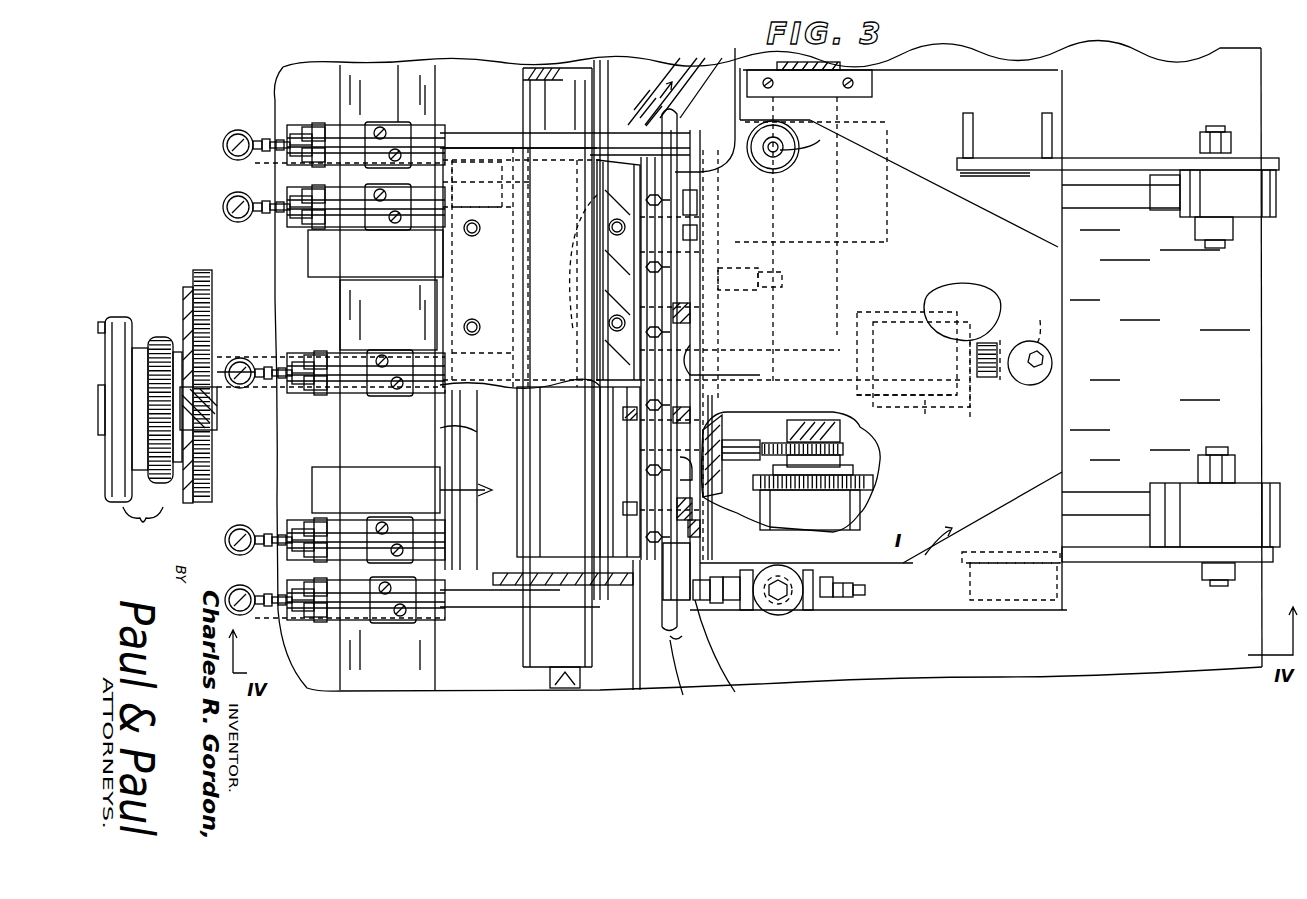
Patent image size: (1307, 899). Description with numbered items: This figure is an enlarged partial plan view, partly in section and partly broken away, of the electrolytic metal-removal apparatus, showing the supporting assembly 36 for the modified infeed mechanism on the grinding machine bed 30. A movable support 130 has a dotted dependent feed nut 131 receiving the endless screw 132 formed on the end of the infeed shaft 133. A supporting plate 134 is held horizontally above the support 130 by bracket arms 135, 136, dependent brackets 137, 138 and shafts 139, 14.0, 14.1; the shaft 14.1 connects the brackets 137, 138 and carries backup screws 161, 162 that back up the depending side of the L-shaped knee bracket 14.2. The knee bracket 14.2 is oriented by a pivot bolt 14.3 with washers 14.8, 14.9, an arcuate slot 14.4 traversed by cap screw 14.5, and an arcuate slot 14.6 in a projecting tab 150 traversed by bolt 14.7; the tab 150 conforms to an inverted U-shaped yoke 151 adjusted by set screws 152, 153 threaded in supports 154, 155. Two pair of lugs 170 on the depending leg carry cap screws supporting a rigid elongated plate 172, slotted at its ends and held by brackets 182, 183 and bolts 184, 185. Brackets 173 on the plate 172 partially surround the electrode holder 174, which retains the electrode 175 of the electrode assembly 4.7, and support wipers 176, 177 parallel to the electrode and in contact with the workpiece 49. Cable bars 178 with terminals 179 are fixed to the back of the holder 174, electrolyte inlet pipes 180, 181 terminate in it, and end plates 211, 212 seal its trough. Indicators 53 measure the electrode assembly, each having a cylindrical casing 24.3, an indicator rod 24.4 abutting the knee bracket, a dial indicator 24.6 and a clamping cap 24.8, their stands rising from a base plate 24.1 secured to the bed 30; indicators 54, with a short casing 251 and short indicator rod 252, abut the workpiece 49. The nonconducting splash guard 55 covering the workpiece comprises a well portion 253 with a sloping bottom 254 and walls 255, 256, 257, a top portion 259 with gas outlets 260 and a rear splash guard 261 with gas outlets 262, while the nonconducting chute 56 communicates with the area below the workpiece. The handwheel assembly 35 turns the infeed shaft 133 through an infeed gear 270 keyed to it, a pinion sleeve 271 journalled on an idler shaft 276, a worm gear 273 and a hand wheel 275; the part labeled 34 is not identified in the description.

The metal grinding machine bed 30 is at (333, 660).
The measuring indicator means 53 is at (238, 132).
The measuring indicator means 54 is at (238, 194).
The dial indicator 24.6 is at (222, 148).
The base plate 24.1 is at (330, 128).
The cap 24.8 is at (378, 130).
The cylindrical casing 24.3 is at (462, 133).
The indicator rod 24.4 is at (690, 165).
The short casing 251 is at (350, 215).
The top splash guard portion 259 is at (445, 305).
The well portion 253 is at (376, 490).
The wall 255 is at (460, 438).
The solid sloping bottom 254 is at (470, 458).
The workpiece 49 is at (540, 470).
The hand wheel 275 is at (116, 325).
The worm gear 273 is at (158, 340).
The idler shaft 276 is at (210, 410).
The pinion sleeve 271 is at (205, 440).
The infeed gear 270 is at (204, 270).
The handwheel assembly 35 is at (143, 529).
The infeed shaft 133 is at (265, 385).
The short indicator rod 252 is at (505, 192).
The gas outlets 260 is at (475, 236).
The end plate 212 is at (564, 258).
The rear splash guard 261 is at (555, 390).
The cable bars 178 is at (592, 622).
The splash guard 55 is at (570, 309).
The gas outlets 262 is at (650, 268).
The terminals 179 is at (640, 345).
The electrode 175 is at (604, 485).
The wiper 176 is at (620, 413).
The electrode holder 174 is at (625, 437).
The wiper 177 is at (605, 545).
The lugs 170 is at (690, 218).
The electrolyte inlet pipe 180 is at (682, 120).
The electrode assembly 4.7 is at (678, 640).
The brackets 173 is at (682, 303).
The bolt 184 is at (683, 195).
The chute 56 is at (679, 88).
The bracket 183 is at (717, 96).
The supporting assembly 36 is at (1136, 357).
The knee bracket 14.2 is at (982, 536).
The supporting plate 134 is at (1020, 610).
The dependent bracket 138 is at (880, 125).
The washer 14.8 is at (766, 160).
The pivot bolt 14.3 is at (800, 152).
The washer 14.9 is at (800, 160).
The backup screw 162 is at (742, 290).
The rigid elongated plate 172 is at (700, 362).
The feed nut 131 is at (907, 419).
The endless screw 132 is at (980, 400).
The slot 14.4 is at (1032, 341).
The cap screw 14.5 is at (1040, 370).
The bracket arm 136 is at (1085, 158).
The movable support 130 is at (1112, 220).
The shaft 14.0 is at (1213, 126).
The bracket arm 135 is at (1098, 548).
The shaft 139 is at (1218, 586).
The shaft 14.1 is at (808, 420).
The backup screw 161 is at (758, 445).
The dependent bracket 137 is at (860, 482).
The wall 256 is at (720, 550).
The bolt 185 is at (700, 560).
The slot 14.6 is at (745, 570).
The bolt 14.7 is at (780, 608).
The support 154 is at (828, 577).
The set screw 152 is at (853, 590).
The set screw 153 is at (705, 600).
The support 155 is at (715, 603).
The projecting tab 150 is at (735, 600).
The yoke 151 is at (830, 610).
The wall 257 is at (483, 590).
The foot 34 is at (545, 680).
The end plate 211 is at (633, 670).
The electrolyte inlet pipe 181 is at (683, 681).
The bracket 182 is at (727, 659).